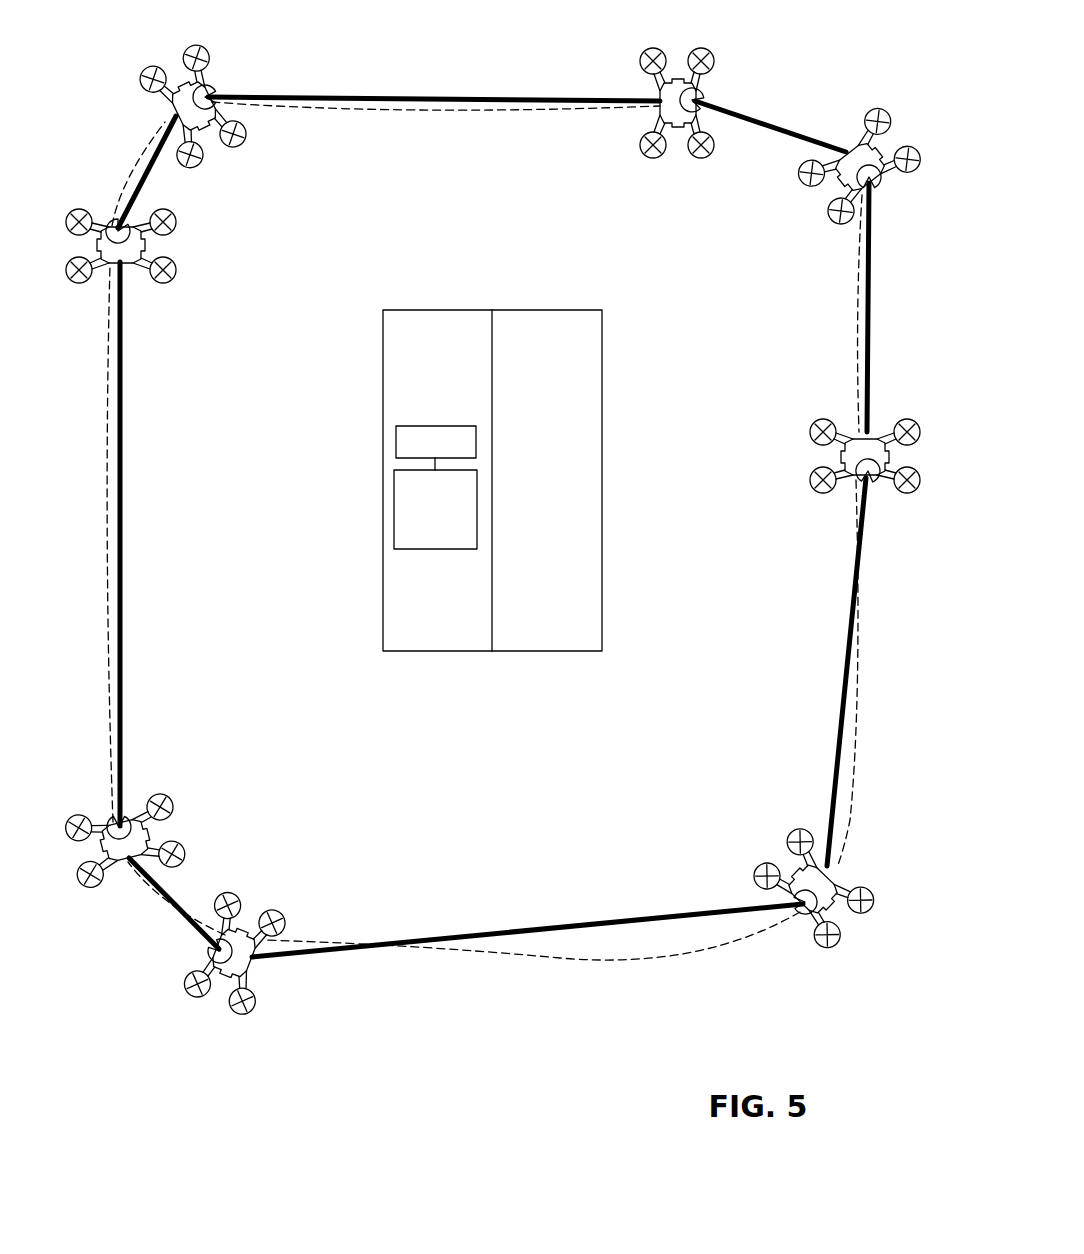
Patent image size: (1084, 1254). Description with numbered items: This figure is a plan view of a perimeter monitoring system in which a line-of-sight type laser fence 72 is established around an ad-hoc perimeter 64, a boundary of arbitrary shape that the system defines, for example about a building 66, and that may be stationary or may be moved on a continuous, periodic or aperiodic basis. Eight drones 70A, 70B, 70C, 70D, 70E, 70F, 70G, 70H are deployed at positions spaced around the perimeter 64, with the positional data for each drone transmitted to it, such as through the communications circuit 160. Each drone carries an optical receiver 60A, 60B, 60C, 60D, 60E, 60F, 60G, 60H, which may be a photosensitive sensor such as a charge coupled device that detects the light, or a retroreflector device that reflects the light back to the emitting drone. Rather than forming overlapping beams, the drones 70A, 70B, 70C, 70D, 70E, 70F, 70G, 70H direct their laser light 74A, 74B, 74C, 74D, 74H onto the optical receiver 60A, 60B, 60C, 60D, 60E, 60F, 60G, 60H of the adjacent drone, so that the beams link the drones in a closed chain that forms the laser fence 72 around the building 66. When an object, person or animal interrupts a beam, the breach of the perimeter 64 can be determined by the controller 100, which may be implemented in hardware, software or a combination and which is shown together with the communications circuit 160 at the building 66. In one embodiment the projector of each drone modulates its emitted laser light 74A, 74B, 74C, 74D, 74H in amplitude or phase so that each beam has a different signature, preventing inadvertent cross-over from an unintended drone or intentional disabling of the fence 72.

The optical receiver 60A is at (228, 106).
The optical receiver 60B is at (149, 243).
The optical receiver 60C is at (147, 824).
The optical receiver 60D is at (229, 946).
The optical receiver 60E is at (777, 900).
The optical receiver 60F is at (835, 475).
The optical receiver 60G is at (863, 192).
The optical receiver 60H is at (703, 128).
The drone 70A is at (247, 142).
The drone 70B is at (163, 283).
The drone 70C is at (155, 795).
The drone 70D is at (272, 912).
The drone 70E is at (752, 872).
The drone 70F is at (815, 425).
The drone 70G is at (843, 230).
The drone 70H is at (645, 147).
The laser light 74A is at (155, 173).
The laser light 74B is at (122, 508).
The laser light 74C is at (178, 897).
The laser light 74D is at (507, 928).
The laser light 74H is at (772, 132).
The ad-hoc perimeter 64 is at (572, 957).
The building 66 is at (488, 508).
The line-of-sight type laser fence 72 is at (375, 1003).
The controller 100 is at (440, 549).
The communications circuit 160 is at (466, 426).